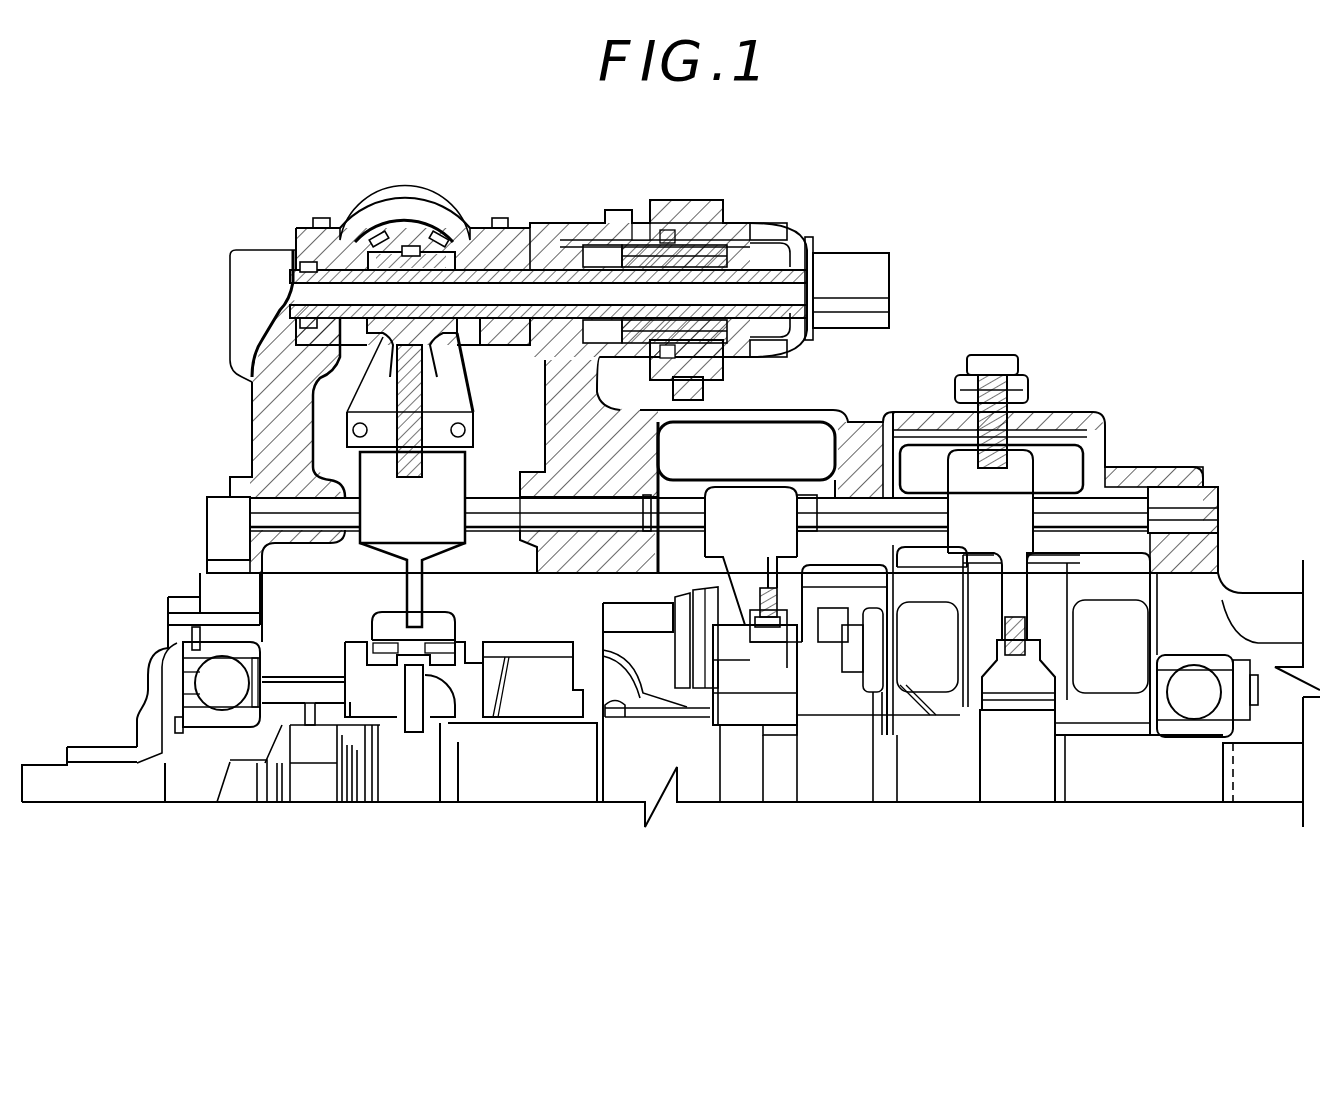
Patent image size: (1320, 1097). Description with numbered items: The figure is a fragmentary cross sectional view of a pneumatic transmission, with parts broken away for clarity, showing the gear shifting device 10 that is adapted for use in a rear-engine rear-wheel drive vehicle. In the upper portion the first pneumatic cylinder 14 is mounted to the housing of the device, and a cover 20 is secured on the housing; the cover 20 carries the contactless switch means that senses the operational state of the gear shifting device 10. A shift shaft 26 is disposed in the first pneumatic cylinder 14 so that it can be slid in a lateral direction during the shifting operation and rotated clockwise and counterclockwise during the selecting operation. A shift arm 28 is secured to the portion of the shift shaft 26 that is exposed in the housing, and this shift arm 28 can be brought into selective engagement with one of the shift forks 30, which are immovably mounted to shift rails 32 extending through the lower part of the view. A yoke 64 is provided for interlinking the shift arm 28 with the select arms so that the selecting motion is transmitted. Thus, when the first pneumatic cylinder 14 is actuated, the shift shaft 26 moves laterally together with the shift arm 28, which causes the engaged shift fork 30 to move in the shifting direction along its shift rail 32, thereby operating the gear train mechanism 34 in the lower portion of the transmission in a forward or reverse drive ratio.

The gear shifting device 10 is at (908, 294).
The first pneumatic cylinder 14 is at (848, 267).
The cover 20 is at (452, 206).
The shift shaft 26 is at (280, 300).
The shift arm 28 is at (391, 253).
The shift fork 30 is at (373, 470).
The shift rail 32 is at (251, 484).
The gear train mechanism 34 is at (513, 780).
The yoke 64 is at (338, 386).